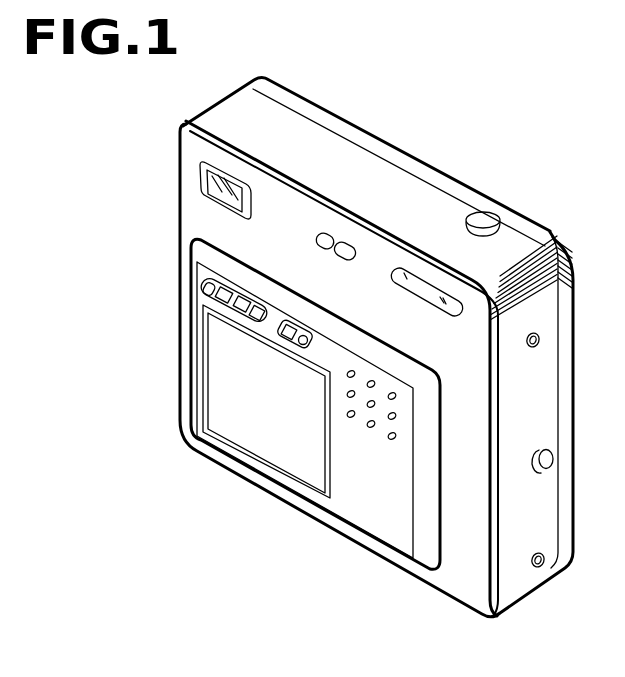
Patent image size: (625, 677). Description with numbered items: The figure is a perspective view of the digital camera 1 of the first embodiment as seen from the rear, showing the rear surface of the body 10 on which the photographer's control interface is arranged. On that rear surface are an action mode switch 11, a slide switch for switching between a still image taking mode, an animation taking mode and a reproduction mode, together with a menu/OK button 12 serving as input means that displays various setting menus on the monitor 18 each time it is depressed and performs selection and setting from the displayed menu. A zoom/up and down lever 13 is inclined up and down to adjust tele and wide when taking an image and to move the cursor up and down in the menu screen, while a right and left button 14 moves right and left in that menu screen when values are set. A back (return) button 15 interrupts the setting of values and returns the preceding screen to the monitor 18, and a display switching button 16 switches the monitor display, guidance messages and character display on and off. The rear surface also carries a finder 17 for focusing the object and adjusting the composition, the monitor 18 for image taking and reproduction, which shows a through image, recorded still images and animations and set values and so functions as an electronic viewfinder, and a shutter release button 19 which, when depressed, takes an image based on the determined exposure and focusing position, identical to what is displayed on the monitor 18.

The digital camera 1 is at (381, 80).
The body 10 is at (405, 163).
The action mode switch 11 is at (284, 335).
The menu/OK button 12 is at (254, 309).
The zoom/up and down lever 13 is at (445, 268).
The right and left button 14 is at (421, 282).
The back (return) button 15 is at (205, 312).
The display switching button 16 is at (213, 289).
The finder 17 is at (204, 186).
The monitor 18 is at (230, 412).
The shutter release button 19 is at (484, 221).